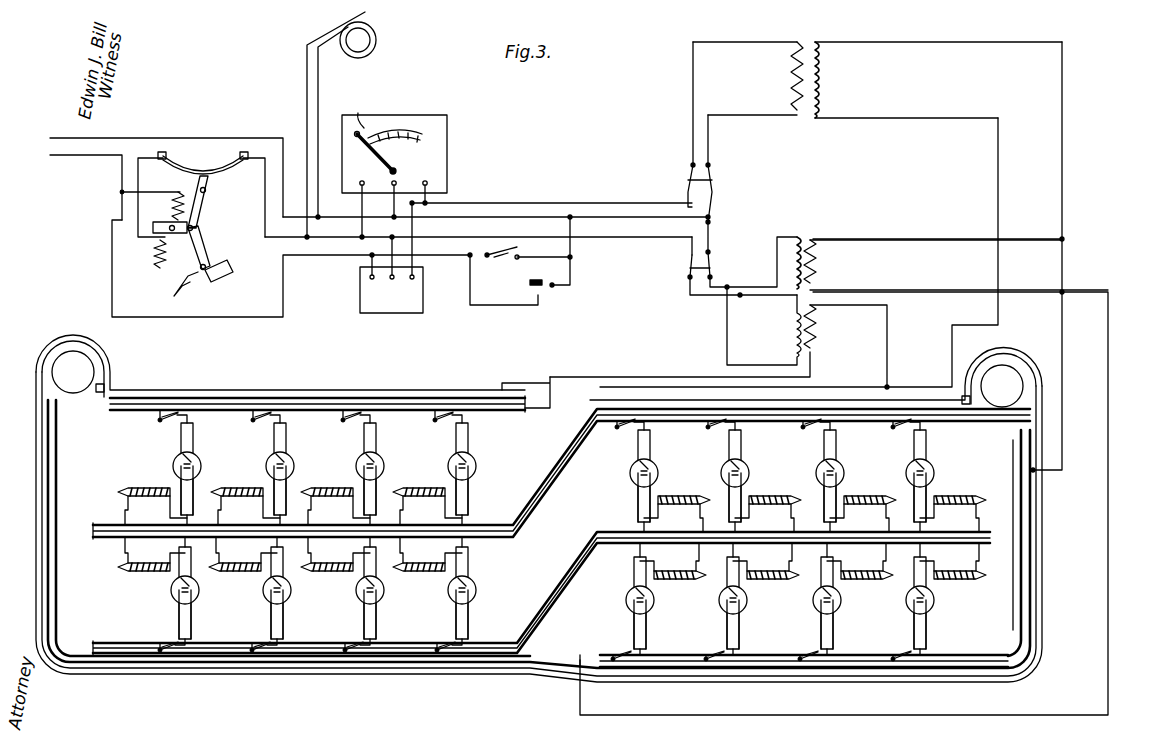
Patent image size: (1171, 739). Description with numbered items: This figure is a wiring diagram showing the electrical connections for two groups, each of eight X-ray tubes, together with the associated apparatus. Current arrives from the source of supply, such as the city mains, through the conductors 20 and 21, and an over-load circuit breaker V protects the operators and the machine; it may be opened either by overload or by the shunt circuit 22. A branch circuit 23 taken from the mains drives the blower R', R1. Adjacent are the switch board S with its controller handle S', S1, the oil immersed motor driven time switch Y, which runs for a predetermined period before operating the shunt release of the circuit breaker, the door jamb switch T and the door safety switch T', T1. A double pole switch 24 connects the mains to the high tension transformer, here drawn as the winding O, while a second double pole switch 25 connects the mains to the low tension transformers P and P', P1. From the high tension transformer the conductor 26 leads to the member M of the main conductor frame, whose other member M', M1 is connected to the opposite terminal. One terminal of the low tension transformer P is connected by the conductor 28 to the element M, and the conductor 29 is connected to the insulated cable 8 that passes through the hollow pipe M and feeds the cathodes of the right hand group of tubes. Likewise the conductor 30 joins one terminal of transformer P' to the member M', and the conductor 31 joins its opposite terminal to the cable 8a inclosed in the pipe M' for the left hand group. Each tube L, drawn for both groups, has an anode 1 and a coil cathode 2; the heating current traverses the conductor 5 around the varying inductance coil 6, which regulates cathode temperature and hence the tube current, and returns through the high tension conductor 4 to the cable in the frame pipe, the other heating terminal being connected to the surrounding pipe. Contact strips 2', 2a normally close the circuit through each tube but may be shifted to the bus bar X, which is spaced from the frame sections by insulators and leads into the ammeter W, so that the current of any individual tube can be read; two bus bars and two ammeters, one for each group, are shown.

The supply conductor 20 is at (62, 138).
The supply conductor 21 is at (62, 155).
The shunt circuit 22 is at (112, 296).
The branch circuit 23 is at (307, 93).
The circuit breaker V is at (183, 278).
The blower R' is at (373, 35).
The blower R1 is at (373, 35).
The switch board S is at (394, 160).
The controller handle S' is at (359, 106).
The controller handle S1 is at (359, 106).
The time switch Y is at (423, 310).
The door jamb switch T is at (520, 261).
The door safety switch T' is at (564, 296).
The door safety switch T1 is at (564, 296).
The transformer O is at (801, 42).
The high tension conductor 26 is at (952, 118).
The double pole switch 24 is at (682, 173).
The double pole switch 25 is at (684, 265).
The low tension transformer P' is at (952, 243).
The low tension transformer P1 is at (952, 243).
The low tension transformer P is at (719, 338).
The conductor 30 is at (940, 239).
The conductor 31 is at (952, 292).
The conductor 28 is at (887, 350).
The conductor 29 is at (645, 377).
The ammeter W is at (95, 360).
The bus bar X is at (310, 392).
The main frame section M is at (541, 505).
The main frame section M' is at (576, 474).
The main frame section M1 is at (576, 474).
The cable 8 is at (540, 408).
The cable 8a is at (510, 537).
The anode 1 is at (195, 462).
The contact strip 2' is at (557, 535).
The contact strip 2a is at (557, 535).
The cathode 2 is at (619, 529).
The high tension conductor 4 is at (464, 505).
The low tension conductor 5 is at (542, 533).
The varying inductance coil 6 is at (547, 532).
The lamp L is at (200, 464).